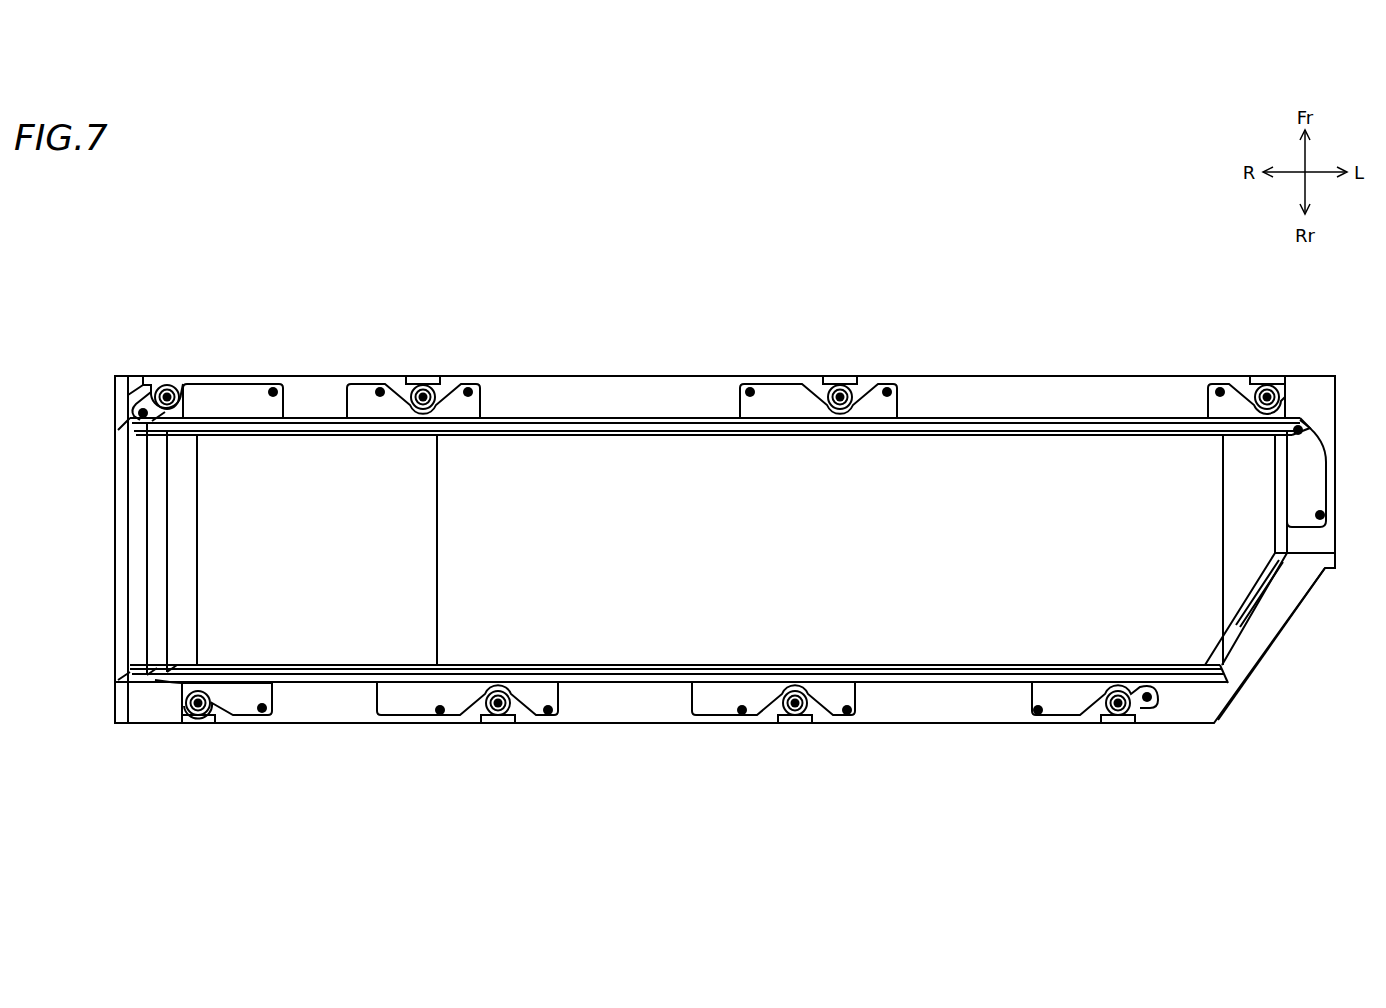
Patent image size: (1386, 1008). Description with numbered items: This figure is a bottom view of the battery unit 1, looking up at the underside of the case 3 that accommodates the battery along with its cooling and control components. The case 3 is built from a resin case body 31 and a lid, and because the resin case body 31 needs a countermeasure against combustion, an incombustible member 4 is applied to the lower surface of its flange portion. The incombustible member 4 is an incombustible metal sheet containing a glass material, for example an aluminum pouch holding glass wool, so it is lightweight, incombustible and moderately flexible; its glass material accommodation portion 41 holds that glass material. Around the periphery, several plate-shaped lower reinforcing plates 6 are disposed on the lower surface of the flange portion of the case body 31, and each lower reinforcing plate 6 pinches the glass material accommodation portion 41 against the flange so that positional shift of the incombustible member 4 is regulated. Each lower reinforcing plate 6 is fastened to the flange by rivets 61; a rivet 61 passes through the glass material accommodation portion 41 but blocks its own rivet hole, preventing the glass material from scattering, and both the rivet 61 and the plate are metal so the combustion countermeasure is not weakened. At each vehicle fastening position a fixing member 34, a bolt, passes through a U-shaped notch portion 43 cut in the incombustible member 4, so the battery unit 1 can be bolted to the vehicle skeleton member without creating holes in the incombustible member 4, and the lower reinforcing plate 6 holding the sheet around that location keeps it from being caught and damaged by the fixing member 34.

The battery unit 1 is at (725, 463).
The case 3 is at (1097, 280).
The incombustible member 4 is at (712, 621).
The glass material accommodation portion 41 is at (938, 580).
The case body 31 is at (1155, 577).
The lower reinforcing plate 6 is at (1062, 700).
The fixing member 34 is at (1110, 717).
The notch portion 43 is at (1128, 717).
The rivet 61 is at (1150, 704).